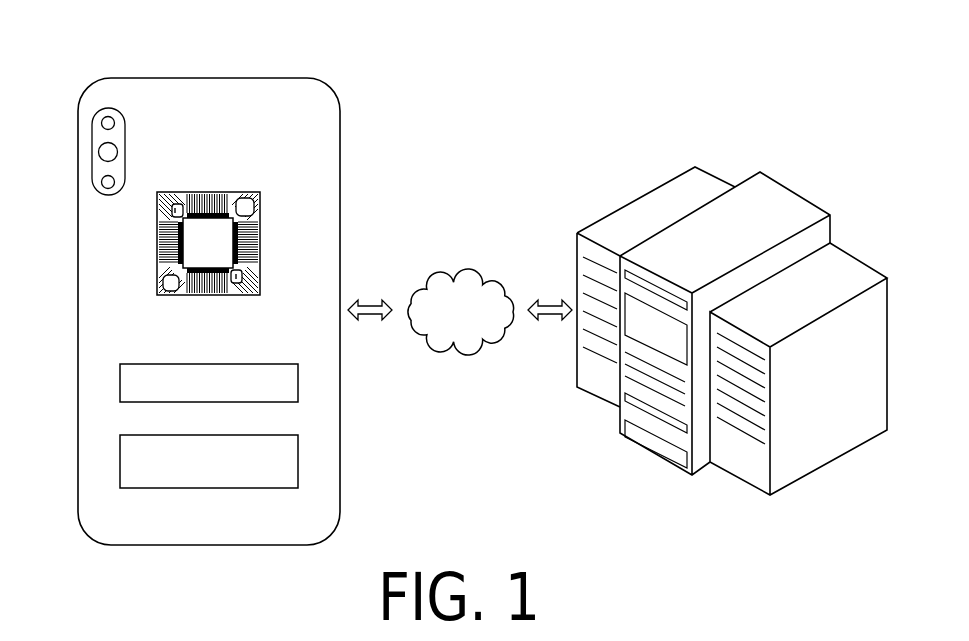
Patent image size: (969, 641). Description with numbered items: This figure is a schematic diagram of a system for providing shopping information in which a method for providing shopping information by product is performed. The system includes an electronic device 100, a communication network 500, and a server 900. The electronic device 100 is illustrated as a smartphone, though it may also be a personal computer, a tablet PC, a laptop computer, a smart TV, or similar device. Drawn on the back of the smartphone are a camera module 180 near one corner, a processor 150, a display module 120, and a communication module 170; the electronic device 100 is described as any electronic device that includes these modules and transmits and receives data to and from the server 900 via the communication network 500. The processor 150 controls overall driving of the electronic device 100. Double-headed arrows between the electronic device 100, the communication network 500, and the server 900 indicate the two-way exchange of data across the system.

The electronic device 100 is at (110, 73).
The display module 120 is at (118, 381).
The processor 150 is at (266, 203).
The communication module 170 is at (118, 452).
The camera module 180 is at (97, 135).
The communication network 500 is at (481, 268).
The server 900 is at (729, 176).